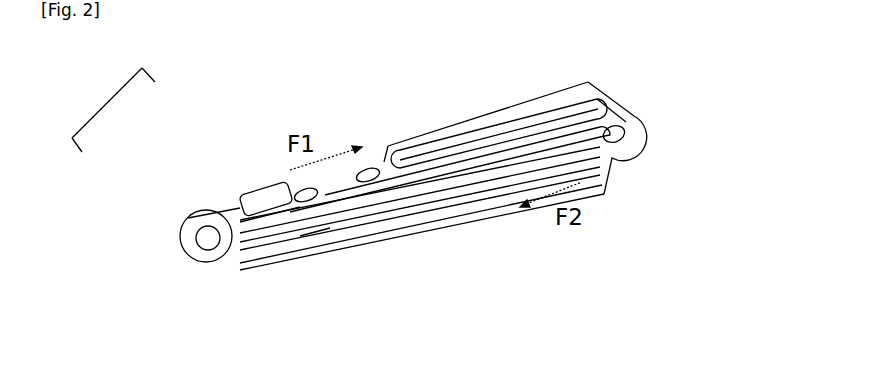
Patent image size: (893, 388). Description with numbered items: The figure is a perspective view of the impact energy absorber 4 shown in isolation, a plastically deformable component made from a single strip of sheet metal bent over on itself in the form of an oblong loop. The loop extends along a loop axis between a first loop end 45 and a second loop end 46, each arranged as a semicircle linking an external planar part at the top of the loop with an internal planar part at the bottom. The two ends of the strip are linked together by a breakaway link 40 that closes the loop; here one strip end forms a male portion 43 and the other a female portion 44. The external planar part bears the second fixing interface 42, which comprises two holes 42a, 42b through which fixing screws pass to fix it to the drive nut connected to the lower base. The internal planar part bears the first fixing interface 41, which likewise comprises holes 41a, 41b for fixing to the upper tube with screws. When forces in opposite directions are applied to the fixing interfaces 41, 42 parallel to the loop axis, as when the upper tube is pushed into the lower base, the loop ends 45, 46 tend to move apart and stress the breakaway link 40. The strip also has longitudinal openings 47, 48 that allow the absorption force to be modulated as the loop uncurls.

The impact energy absorber 4 is at (418, 205).
The breakaway link 40 is at (106, 102).
The first fixing interface 41 is at (418, 205).
The hole of the first fixing interface 41a is at (587, 142).
The hole of the first fixing interface 41b is at (517, 167).
The second fixing interface 42 is at (343, 193).
The hole of the second fixing interface 42a is at (305, 197).
The hole of the second fixing interface 42b is at (352, 189).
The male portion 43 is at (247, 216).
The female portion 44 is at (248, 202).
The first loop end 45 is at (638, 123).
The second loop end 46 is at (223, 263).
The longitudinal opening 47 is at (498, 134).
The longitudinal opening 48 is at (353, 245).